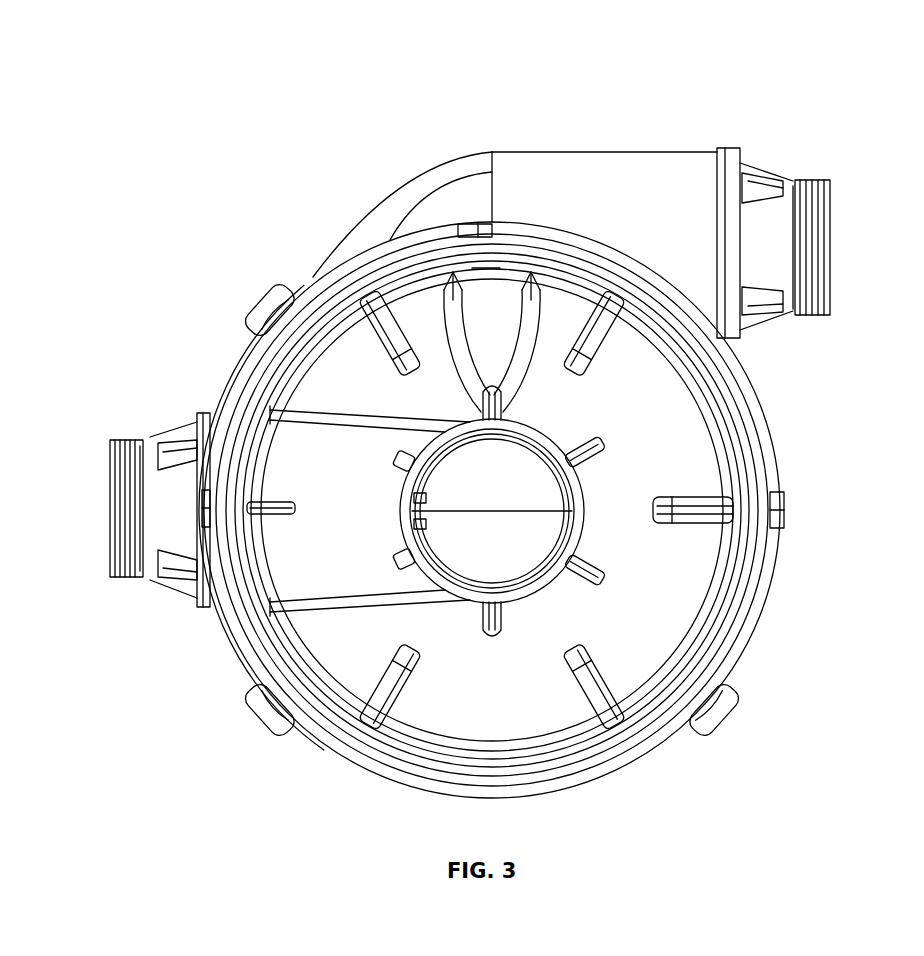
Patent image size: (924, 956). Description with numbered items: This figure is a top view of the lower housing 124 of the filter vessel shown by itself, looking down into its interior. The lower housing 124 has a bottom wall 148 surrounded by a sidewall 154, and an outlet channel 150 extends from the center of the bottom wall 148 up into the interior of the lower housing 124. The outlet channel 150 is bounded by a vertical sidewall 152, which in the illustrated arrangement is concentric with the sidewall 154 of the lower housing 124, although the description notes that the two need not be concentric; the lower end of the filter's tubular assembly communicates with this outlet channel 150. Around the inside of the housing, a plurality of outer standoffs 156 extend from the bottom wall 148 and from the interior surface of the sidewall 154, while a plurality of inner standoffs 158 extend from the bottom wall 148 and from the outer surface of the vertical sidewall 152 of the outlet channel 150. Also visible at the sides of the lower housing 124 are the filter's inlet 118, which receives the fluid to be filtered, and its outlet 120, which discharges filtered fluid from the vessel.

The lower housing 124 is at (826, 55).
The inlet 118 is at (812, 166).
The outlet 120 is at (127, 424).
The bottom wall 148 is at (603, 441).
The outlet channel 150 is at (388, 505).
The vertical sidewall 152 is at (590, 522).
The sidewall 154 is at (305, 678).
The outer standoffs 156 is at (583, 300).
The inner standoffs 158 is at (657, 385).